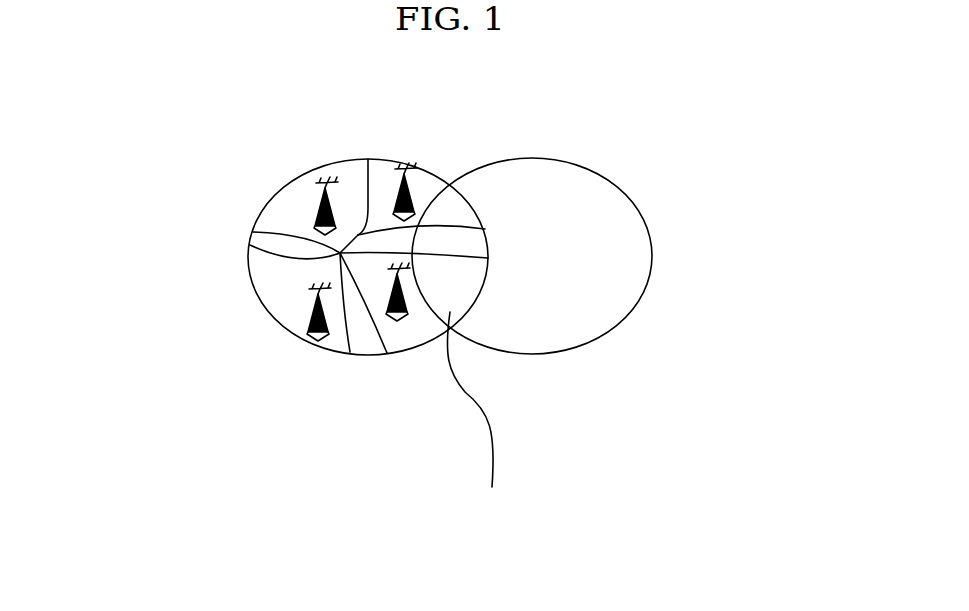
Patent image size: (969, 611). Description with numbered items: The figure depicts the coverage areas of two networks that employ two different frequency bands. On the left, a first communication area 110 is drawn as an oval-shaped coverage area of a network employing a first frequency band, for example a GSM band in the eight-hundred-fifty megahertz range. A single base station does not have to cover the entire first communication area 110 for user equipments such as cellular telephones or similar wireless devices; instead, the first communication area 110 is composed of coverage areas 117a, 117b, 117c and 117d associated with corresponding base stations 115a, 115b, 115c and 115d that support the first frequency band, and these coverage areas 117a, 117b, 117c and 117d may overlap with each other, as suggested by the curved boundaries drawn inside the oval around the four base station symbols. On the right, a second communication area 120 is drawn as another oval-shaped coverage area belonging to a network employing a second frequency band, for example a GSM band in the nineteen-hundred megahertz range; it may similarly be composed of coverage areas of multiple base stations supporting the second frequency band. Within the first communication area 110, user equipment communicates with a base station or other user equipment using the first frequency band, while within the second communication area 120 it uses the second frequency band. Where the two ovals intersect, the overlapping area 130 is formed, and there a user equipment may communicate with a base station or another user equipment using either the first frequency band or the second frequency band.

The first communication area 110 is at (268, 206).
The base station 115a is at (313, 185).
The base station 115b is at (409, 170).
The base station 115c is at (308, 333).
The base station 115d is at (405, 316).
The coverage area 117a is at (260, 247).
The coverage area 117b is at (358, 235).
The coverage area 117c is at (370, 312).
The coverage area 117d is at (350, 345).
The second communication area 120 is at (530, 358).
The overlapping area 130 is at (479, 415).